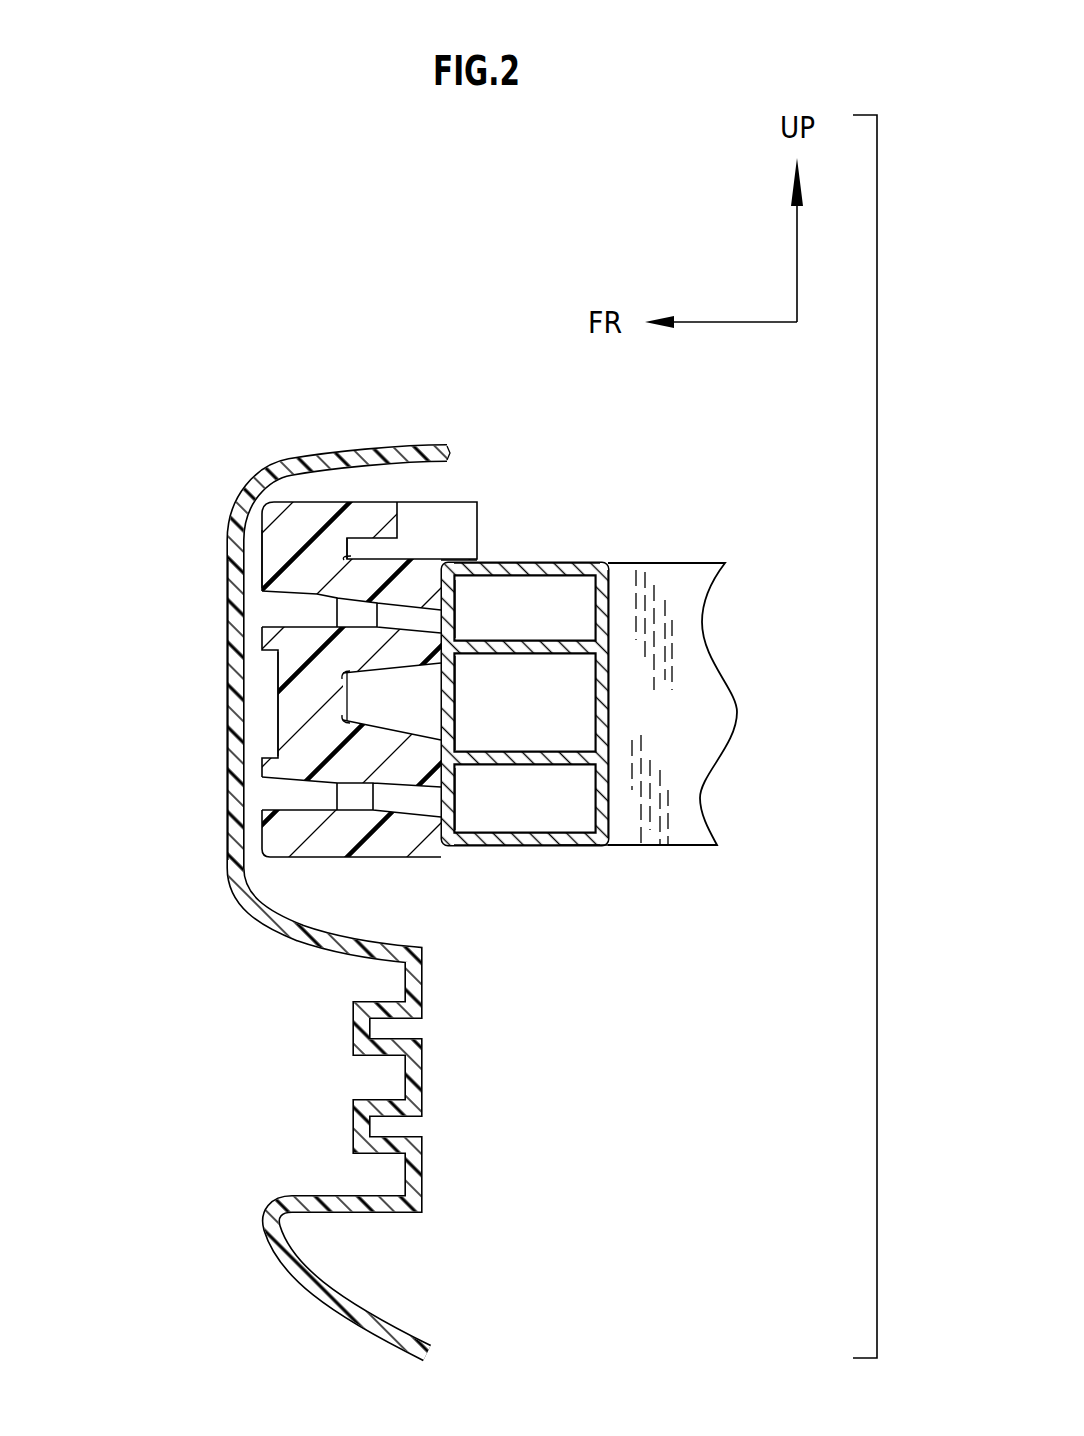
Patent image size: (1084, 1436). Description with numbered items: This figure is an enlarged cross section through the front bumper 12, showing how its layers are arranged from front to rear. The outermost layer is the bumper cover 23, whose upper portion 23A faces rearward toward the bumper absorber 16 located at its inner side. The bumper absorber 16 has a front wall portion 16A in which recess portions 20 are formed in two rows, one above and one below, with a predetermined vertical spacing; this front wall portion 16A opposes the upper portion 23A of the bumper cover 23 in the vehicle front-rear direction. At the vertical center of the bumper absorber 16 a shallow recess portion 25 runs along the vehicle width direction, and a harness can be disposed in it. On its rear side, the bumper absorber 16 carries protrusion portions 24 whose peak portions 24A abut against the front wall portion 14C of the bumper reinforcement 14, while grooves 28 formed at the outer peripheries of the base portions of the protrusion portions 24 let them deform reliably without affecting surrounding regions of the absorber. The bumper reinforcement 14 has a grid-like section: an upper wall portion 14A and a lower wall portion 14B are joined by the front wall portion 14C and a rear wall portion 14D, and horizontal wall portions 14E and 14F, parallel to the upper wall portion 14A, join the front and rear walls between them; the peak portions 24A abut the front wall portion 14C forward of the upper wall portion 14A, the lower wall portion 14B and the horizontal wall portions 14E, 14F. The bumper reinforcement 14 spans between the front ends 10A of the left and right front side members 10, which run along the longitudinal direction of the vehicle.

The front side member 10 is at (683, 560).
The front end 10A is at (585, 845).
The front bumper 12 is at (548, 434).
The bumper reinforcement 14 is at (604, 558).
The upper wall portion 14A is at (558, 563).
The lower wall portion 14B is at (527, 845).
The front wall portion 14C is at (455, 715).
The rear wall portion 14D is at (608, 722).
The horizontal wall portion 14E is at (527, 640).
The horizontal wall portion 14F is at (537, 768).
The bumper absorber 16 is at (383, 498).
The front wall portion 16A is at (259, 577).
The recess portion 20 is at (289, 613).
The bumper cover 23 is at (258, 471).
The upper portion 23A is at (228, 672).
The protrusion portion 24 is at (436, 556).
The peak portion 24A is at (455, 578).
The recess portion 25 is at (275, 722).
The groove 28 is at (343, 557).